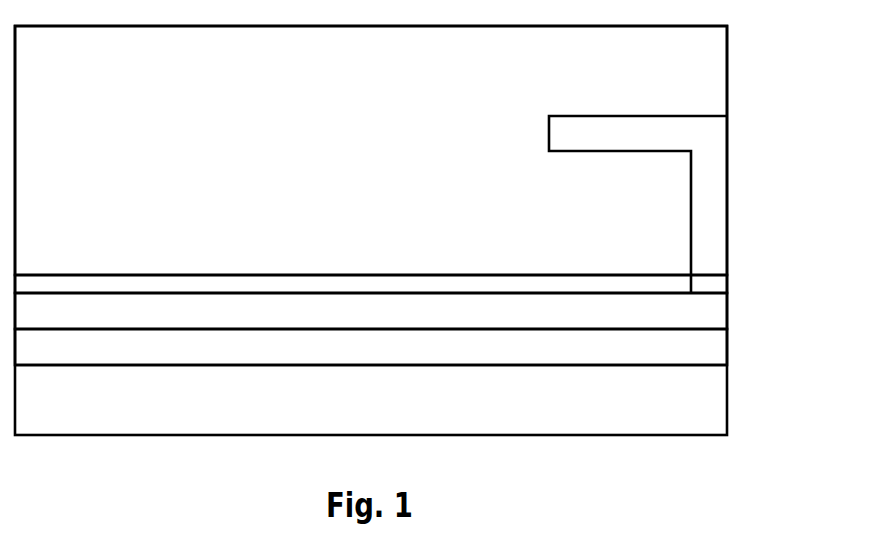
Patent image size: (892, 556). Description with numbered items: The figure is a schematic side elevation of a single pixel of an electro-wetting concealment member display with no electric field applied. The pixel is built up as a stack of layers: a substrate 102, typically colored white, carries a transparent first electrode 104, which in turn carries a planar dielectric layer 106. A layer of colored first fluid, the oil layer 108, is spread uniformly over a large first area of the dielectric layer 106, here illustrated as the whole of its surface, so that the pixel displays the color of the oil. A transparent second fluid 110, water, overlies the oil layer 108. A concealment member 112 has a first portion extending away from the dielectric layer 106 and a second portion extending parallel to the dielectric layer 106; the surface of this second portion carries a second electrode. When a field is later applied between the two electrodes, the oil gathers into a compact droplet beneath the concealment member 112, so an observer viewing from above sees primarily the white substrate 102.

The substrate 102 is at (673, 399).
The transparent first electrode 104 is at (673, 346).
The dielectric layer 106 is at (673, 311).
The oil layer 108 is at (657, 284).
The second fluid 110 is at (310, 148).
The concealment member 112 is at (683, 135).